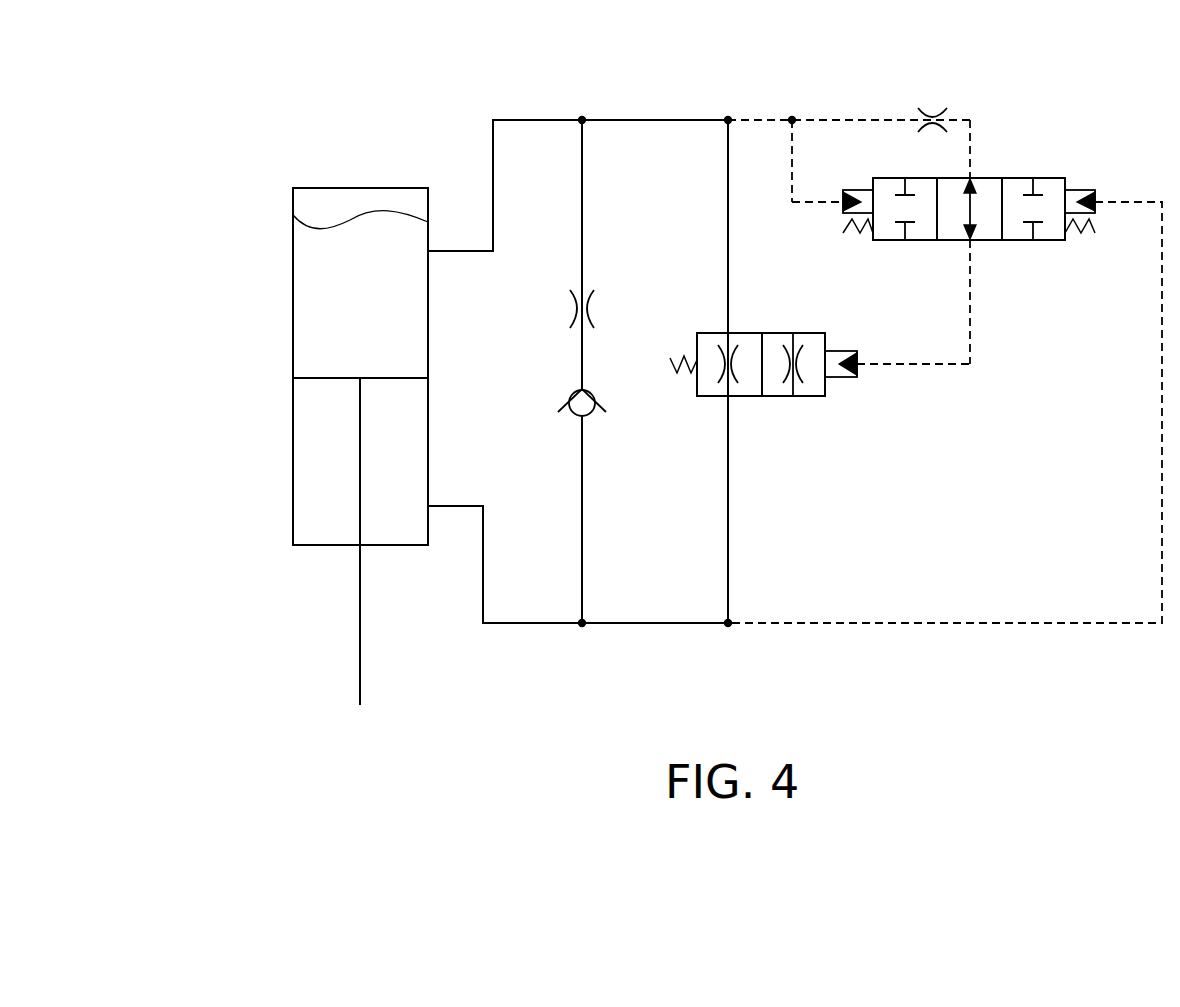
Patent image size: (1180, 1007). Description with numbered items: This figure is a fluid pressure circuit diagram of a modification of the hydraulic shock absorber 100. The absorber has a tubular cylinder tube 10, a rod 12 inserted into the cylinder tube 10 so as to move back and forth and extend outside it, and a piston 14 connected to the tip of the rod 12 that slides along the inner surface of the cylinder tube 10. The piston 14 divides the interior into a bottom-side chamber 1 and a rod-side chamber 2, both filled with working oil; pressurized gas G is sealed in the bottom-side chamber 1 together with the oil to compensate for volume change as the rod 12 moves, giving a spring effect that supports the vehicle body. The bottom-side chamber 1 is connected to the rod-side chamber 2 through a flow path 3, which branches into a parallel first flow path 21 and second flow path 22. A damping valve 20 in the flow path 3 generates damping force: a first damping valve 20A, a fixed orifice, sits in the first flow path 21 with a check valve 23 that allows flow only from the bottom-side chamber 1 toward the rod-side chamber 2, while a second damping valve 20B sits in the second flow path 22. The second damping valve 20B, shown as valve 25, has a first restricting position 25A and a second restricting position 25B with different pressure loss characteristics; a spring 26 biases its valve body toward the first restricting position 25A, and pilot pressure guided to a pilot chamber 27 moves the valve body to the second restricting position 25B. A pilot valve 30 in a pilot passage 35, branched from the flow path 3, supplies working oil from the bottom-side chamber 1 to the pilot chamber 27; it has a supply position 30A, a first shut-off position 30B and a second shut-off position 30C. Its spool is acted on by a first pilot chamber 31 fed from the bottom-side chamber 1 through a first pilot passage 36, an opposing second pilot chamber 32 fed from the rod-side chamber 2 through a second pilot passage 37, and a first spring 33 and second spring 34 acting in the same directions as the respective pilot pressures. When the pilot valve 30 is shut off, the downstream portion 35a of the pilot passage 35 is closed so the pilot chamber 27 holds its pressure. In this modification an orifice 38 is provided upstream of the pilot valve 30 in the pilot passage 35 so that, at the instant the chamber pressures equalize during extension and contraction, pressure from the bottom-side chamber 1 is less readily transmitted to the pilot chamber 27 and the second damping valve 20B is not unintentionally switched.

The hydraulic shock absorber 100 is at (310, 140).
The pressurized gas G is at (382, 205).
The bottom-side chamber 1 is at (327, 252).
The rod-side chamber 2 is at (333, 467).
The cylinder tube 10 is at (293, 297).
The rod 12 is at (360, 648).
The piston 14 is at (327, 378).
The flow path 3 is at (530, 118).
The damping valve 20 is at (595, 311).
The first damping valve 20A is at (570, 312).
The second damping valve 20B is at (708, 328).
The first flow path 21 is at (582, 192).
The second flow path 22 is at (728, 190).
The check valve 23 is at (563, 410).
The variable throttle valve 25 is at (748, 369).
The first restricting position 25A is at (748, 332).
The second restricting position 25B is at (816, 332).
The spring 26 is at (670, 363).
The pilot chamber 27 is at (838, 380).
The pilot valve 30 is at (1003, 246).
The supply position 30A is at (992, 178).
The first shut-off position 30B is at (886, 178).
The second shut-off position 30C is at (1050, 178).
The first pilot chamber 31 is at (862, 198).
The second pilot chamber 32 is at (1078, 197).
The first spring 33 is at (860, 236).
The second spring 34 is at (1082, 236).
The pilot passage 35 is at (805, 118).
The downstream portion 35a is at (950, 366).
The first pilot passage 36 is at (805, 203).
The second pilot passage 37 is at (1162, 377).
The orifice 38 is at (932, 106).